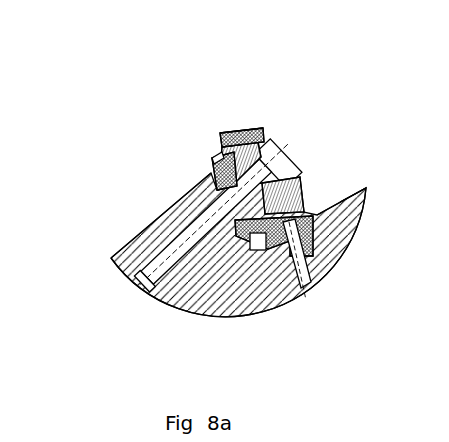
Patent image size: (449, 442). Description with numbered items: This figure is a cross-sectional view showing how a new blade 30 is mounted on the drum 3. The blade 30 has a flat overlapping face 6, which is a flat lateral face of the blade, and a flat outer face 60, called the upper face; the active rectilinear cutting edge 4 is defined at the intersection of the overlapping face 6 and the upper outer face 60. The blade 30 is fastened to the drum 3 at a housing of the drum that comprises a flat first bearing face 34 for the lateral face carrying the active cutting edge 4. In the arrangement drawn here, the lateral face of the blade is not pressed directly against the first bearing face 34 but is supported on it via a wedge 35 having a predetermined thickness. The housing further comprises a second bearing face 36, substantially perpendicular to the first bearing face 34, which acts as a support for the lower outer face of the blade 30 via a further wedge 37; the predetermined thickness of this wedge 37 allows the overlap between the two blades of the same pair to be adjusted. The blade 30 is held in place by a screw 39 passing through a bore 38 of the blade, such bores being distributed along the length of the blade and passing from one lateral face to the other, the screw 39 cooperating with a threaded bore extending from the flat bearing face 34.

The drum 3 is at (171, 308).
The active rectilinear cutting edge 4 is at (214, 131).
The flat overlapping face 6 is at (211, 147).
The blade 30 is at (281, 95).
The first bearing face 34 is at (216, 191).
The wedge 35 is at (204, 161).
The second bearing face 36 is at (291, 300).
The wedge 37 is at (361, 182).
The bore 38 is at (281, 158).
The screw 39 is at (138, 288).
The flat outer face 60 is at (243, 124).